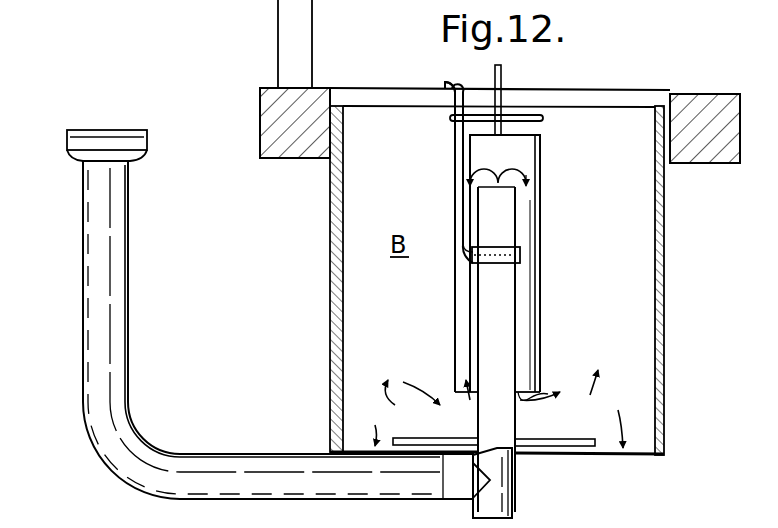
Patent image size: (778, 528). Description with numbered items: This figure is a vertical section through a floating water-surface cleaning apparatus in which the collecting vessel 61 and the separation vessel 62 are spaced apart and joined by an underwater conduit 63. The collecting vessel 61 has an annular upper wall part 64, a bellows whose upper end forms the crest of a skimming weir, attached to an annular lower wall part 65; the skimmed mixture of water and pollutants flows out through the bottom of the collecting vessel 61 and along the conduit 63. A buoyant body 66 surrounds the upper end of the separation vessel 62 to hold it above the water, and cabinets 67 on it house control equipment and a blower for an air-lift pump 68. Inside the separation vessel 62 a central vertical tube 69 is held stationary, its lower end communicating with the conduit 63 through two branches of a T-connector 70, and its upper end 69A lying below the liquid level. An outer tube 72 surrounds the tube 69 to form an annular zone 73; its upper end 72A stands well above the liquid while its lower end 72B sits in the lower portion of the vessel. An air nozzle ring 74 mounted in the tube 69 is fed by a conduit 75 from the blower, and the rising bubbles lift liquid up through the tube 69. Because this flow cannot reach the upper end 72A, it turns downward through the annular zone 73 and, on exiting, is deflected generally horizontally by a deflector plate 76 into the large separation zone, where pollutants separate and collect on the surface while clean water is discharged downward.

The collecting vessel 61 is at (241, 311).
The separation vessel 62 is at (330, 237).
The underwater conduit 63 is at (116, 328).
The annular upper wall part 64 is at (147, 138).
The annular lower wall part 65 is at (138, 158).
The buoyant body 66 is at (708, 108).
The cabinets 67 is at (300, 42).
The air-lift pump 68 is at (462, 265).
The vertical tube 69 is at (518, 212).
The upper end of the tube 69A is at (540, 166).
The T-connector 70 is at (513, 487).
The outer tube 72 is at (536, 343).
The upper end of the outer tube 72A is at (543, 127).
The lower end of the outer tube 72B is at (519, 396).
The annular zone 73 is at (538, 302).
The air nozzle ring 74 is at (522, 258).
The conduit 75 is at (456, 148).
The deflector plate 76 is at (583, 446).